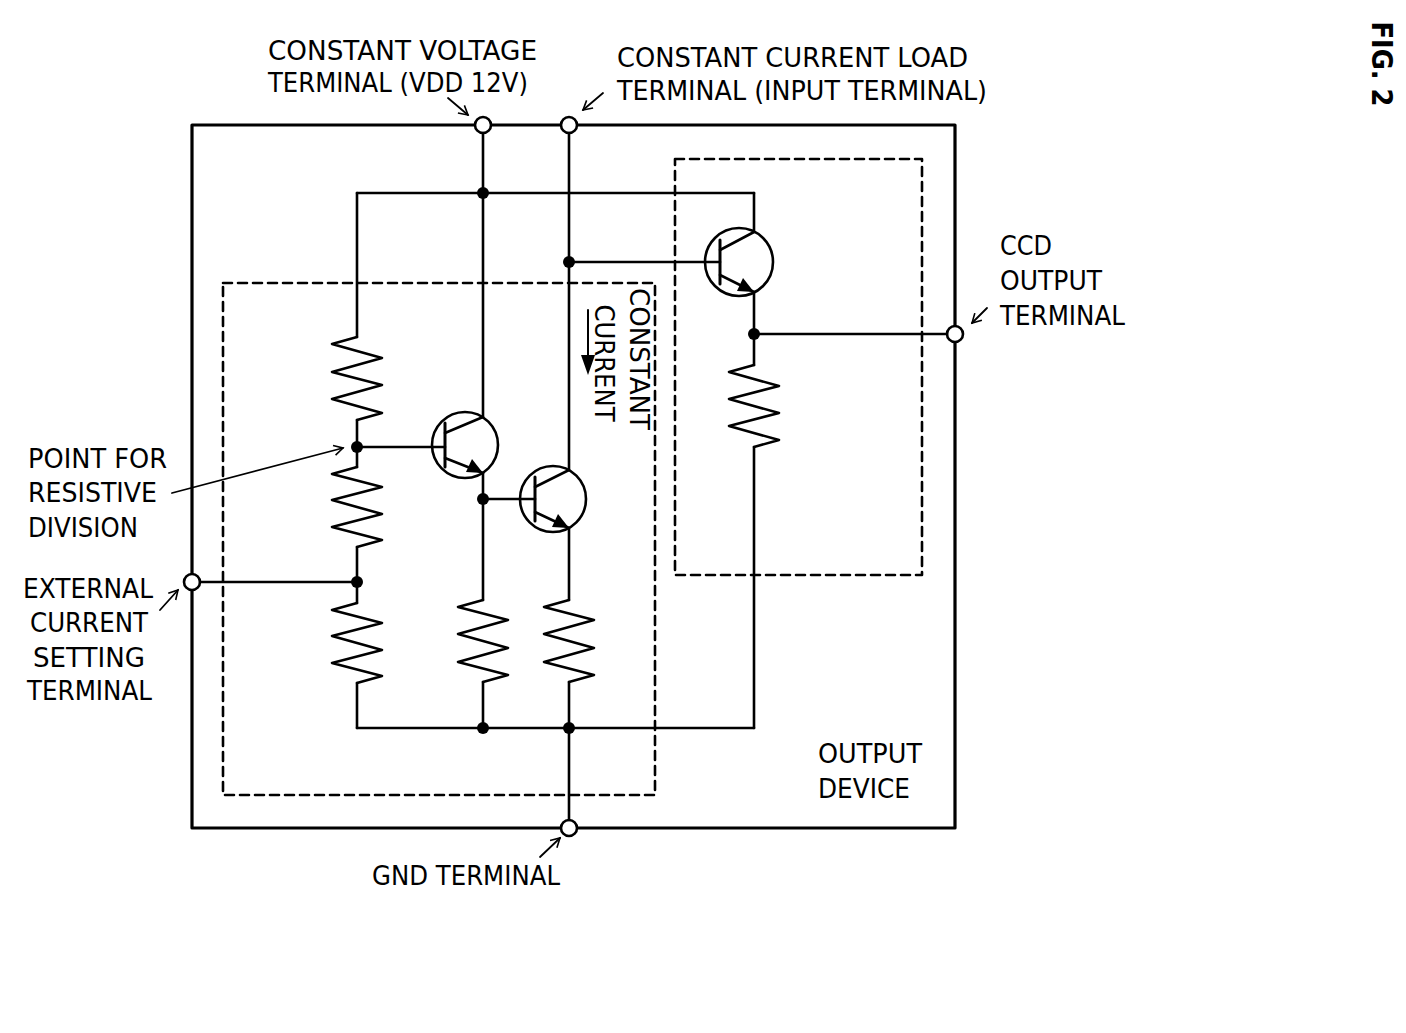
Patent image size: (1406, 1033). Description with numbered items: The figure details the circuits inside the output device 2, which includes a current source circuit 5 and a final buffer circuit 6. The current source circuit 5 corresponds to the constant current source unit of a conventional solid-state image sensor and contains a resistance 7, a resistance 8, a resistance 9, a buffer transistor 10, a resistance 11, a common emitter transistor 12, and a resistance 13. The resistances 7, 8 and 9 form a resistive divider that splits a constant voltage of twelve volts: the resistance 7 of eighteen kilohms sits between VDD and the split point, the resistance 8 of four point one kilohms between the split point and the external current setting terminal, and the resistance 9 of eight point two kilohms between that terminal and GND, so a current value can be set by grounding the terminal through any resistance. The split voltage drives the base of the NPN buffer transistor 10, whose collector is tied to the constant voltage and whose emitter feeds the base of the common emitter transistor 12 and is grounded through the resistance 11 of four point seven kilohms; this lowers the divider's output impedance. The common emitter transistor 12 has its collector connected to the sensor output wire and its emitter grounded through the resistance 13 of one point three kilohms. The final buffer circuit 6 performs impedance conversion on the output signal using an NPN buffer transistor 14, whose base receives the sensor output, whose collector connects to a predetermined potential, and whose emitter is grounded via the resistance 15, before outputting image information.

The output device 2 is at (215, 130).
The current source circuit 5 is at (246, 301).
The final buffer circuit 6 is at (910, 563).
The resistance 7 is at (322, 373).
The resistance 8 is at (320, 517).
The resistance 9 is at (332, 675).
The buffer transistor 10 is at (495, 420).
The resistance 11 is at (457, 668).
The common emitter transistor 12 is at (580, 532).
The resistance 13 is at (548, 673).
The buffer transistor 14 is at (787, 248).
The resistance 15 is at (787, 408).